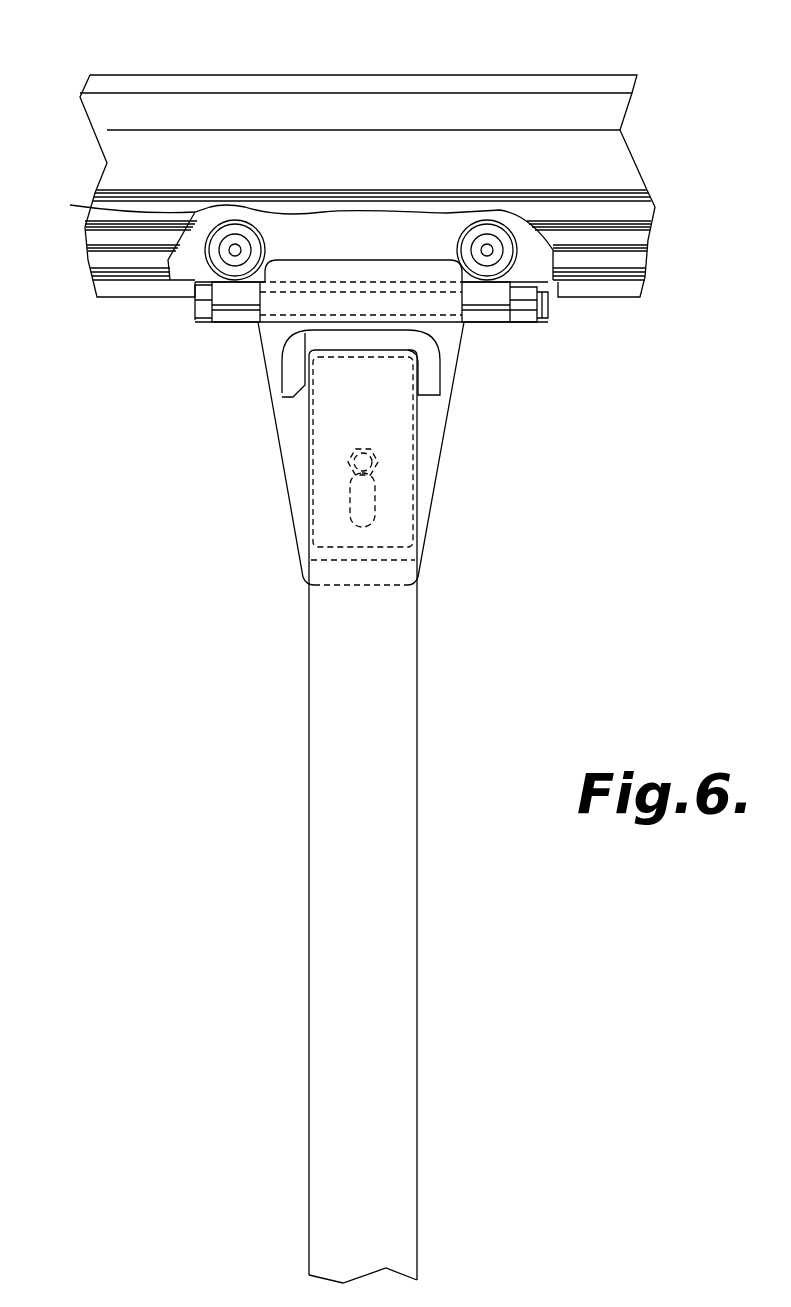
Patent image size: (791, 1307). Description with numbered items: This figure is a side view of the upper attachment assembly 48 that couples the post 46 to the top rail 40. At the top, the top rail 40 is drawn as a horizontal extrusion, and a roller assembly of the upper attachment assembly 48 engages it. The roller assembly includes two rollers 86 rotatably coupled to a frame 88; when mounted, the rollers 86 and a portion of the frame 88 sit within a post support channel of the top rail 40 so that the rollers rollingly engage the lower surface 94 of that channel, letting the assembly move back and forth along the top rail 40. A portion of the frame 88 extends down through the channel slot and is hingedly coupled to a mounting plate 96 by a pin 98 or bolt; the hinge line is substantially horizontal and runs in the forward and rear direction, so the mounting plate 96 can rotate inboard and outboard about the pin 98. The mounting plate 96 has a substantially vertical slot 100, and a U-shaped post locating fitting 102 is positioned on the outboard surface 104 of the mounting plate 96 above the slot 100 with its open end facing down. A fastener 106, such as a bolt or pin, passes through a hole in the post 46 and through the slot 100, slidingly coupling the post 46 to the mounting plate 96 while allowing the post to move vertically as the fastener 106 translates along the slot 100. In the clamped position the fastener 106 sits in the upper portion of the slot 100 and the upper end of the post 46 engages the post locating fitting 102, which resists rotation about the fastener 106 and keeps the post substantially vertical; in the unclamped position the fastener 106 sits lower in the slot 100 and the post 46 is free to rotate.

The top rail 40 is at (538, 75).
The post 46 is at (316, 903).
The upper attachment assembly 48 is at (215, 395).
The rollers 86 is at (207, 223).
The frame 88 is at (347, 237).
The lower surface 94 is at (548, 290).
The mounting plate 96 is at (443, 470).
The pin 98 is at (193, 323).
The slot 100 is at (373, 492).
The post locating fitting 102 is at (447, 343).
The outboard surface 104 is at (300, 418).
The fastener 106 is at (380, 447).